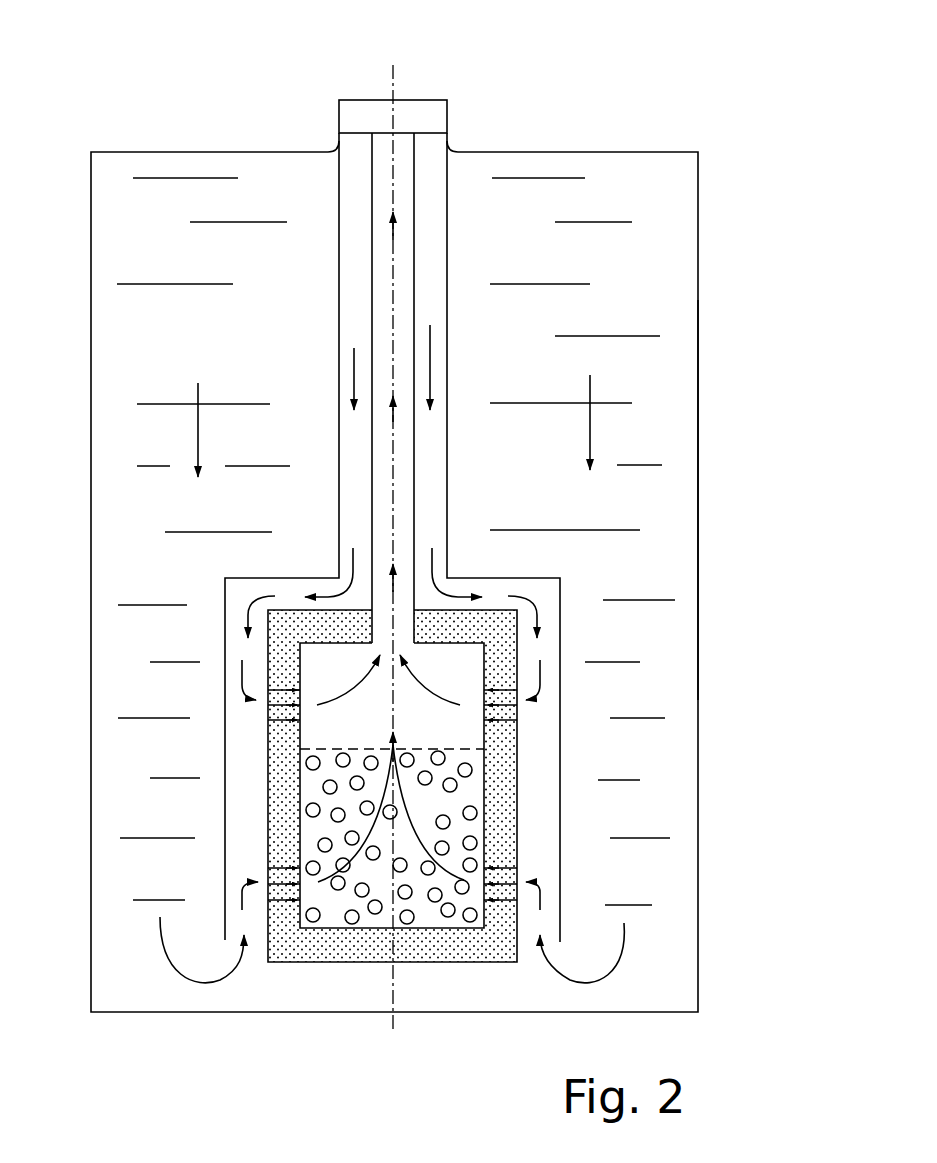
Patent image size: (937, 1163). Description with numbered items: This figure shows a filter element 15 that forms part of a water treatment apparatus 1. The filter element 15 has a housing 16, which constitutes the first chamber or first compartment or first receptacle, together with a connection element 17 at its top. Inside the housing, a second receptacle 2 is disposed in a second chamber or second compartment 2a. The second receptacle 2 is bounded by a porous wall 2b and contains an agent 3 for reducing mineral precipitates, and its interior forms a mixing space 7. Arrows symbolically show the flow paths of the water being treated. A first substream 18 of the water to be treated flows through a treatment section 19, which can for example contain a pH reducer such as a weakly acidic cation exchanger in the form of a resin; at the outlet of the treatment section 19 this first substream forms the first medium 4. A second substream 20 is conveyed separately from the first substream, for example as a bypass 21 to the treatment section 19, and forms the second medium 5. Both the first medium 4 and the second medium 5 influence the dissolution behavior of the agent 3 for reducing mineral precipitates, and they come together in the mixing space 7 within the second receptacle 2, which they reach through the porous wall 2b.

The water treatment apparatus 1 is at (238, 88).
The second receptacle 2 is at (550, 838).
The second chamber or second compartment 2a is at (537, 815).
The porous wall 2b is at (517, 720).
The agent for reducing mineral precipitates 3 is at (316, 762).
The first medium 4 is at (624, 950).
The second medium 5 is at (432, 368).
The mixing space 7 is at (437, 722).
The filter element 15 is at (584, 118).
The housing or first chamber or first compartment or first receptacle 16 is at (700, 533).
The connection element 17 is at (433, 90).
The substream 18 is at (195, 432).
The treatment section 19 is at (137, 625).
The substream 20 is at (431, 345).
The bypass 21 is at (432, 472).